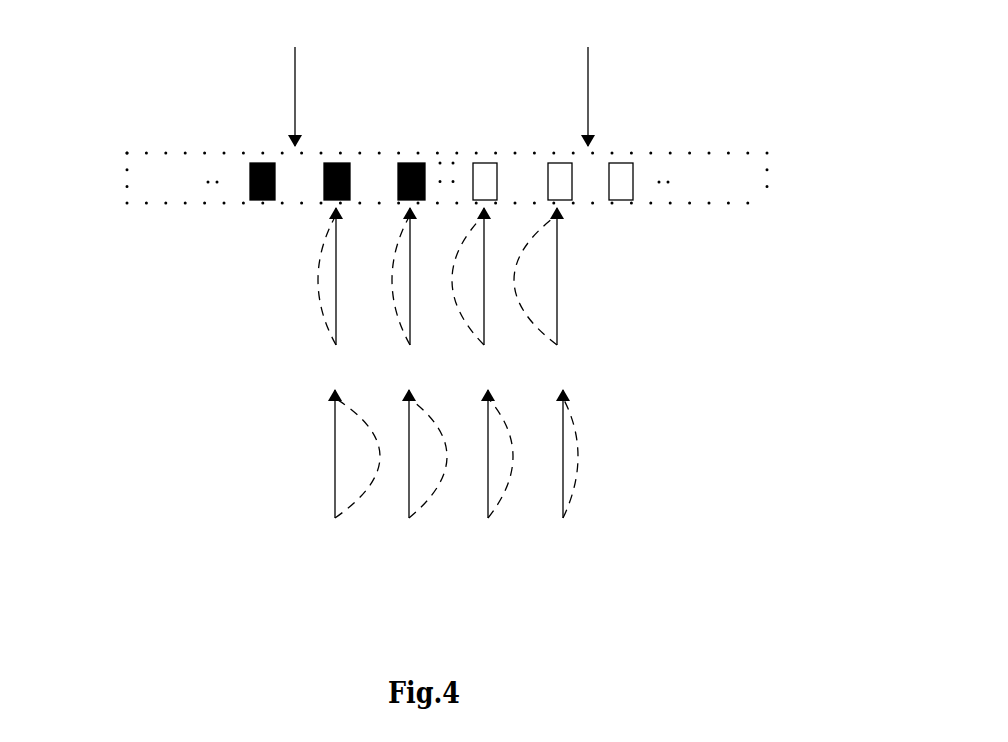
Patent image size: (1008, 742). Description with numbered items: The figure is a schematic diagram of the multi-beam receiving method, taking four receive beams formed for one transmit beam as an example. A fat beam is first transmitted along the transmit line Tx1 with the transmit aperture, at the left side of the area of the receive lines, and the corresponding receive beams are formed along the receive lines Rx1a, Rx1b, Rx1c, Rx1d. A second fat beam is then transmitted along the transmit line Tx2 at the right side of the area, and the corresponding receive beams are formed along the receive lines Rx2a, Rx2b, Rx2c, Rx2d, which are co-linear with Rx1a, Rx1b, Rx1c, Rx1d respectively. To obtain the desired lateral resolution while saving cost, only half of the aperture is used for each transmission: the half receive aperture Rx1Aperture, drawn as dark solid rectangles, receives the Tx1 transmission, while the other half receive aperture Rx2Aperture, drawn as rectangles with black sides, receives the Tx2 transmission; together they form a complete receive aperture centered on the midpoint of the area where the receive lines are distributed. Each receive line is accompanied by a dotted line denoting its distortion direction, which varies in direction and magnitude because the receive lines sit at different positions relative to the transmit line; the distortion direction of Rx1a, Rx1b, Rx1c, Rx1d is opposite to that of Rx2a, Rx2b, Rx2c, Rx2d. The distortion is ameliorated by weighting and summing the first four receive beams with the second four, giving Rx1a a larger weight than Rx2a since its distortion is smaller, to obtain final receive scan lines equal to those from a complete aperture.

The transmit line Tx1 is at (292, 82).
The transmit line Tx2 is at (592, 82).
The receive aperture Rx1Aperture is at (242, 198).
The receive aperture Rx2Aperture is at (661, 198).
The receive line Rx1a is at (333, 295).
The receive line Rx1b is at (406, 295).
The receive line Rx1c is at (483, 295).
The receive line Rx1d is at (549, 295).
The receive line Rx2a is at (343, 470).
The receive line Rx2b is at (412, 470).
The receive line Rx2c is at (487, 470).
The receive line Rx2d is at (557, 470).